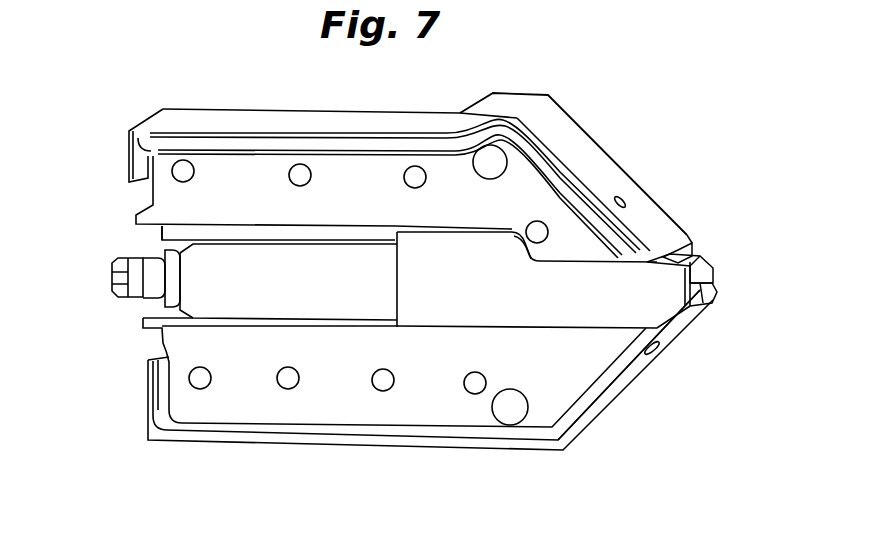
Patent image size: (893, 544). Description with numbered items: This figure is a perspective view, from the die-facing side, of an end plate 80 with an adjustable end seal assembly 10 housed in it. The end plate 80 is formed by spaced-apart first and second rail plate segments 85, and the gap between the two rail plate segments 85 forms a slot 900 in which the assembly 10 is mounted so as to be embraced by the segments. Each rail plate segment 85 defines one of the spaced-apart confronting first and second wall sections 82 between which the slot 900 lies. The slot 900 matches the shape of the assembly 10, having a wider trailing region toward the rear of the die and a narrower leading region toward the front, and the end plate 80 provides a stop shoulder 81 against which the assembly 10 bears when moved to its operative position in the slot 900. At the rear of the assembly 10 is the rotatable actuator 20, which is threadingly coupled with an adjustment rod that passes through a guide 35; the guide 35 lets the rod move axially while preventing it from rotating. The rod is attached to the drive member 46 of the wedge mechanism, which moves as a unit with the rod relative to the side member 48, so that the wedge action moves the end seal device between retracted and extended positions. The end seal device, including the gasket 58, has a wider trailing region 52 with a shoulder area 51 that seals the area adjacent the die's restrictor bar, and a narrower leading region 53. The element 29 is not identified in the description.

The adjustable end seal assembly 10 is at (98, 306).
The actuator 20 is at (112, 280).
The bolt 29 is at (127, 280).
The guide 35 is at (272, 308).
The drive member 46 is at (717, 292).
The side member 48 is at (697, 262).
The shoulder area 51 is at (460, 250).
The trailing region 52 is at (405, 283).
The leading region 53 is at (615, 300).
The gasket 58 is at (533, 300).
The end plate 80 is at (608, 175).
The stop shoulder 81 is at (556, 248).
The wall sections 82 is at (668, 252).
The rail plate segments 85 is at (228, 177).
The slot 900 is at (143, 243).